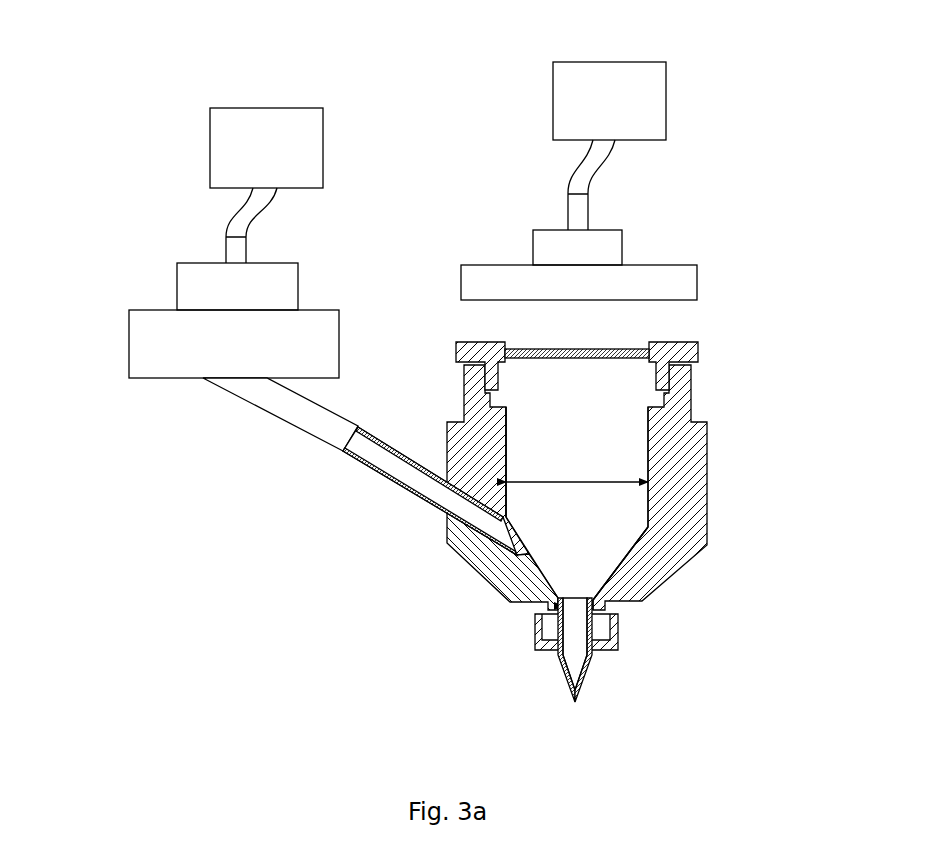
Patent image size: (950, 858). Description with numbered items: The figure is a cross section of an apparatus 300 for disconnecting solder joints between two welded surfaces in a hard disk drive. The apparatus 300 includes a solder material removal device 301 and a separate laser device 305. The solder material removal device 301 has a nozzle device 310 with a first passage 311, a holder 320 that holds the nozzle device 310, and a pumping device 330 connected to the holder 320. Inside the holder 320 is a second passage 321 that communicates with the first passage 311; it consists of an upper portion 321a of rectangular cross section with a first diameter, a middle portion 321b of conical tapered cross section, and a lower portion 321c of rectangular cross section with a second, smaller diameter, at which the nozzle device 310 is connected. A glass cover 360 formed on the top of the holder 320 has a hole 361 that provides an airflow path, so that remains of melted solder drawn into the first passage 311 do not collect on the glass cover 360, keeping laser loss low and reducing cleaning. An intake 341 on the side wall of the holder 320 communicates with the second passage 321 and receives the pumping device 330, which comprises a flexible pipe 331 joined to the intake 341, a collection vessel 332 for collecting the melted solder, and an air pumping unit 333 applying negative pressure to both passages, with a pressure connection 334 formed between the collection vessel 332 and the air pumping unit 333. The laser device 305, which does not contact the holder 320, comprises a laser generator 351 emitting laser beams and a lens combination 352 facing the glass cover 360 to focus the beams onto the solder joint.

The apparatus 300 is at (178, 38).
The solder material removal device 301 is at (722, 462).
The laser device 305 is at (675, 223).
The nozzle device 310 is at (600, 663).
The first passage 311 is at (577, 647).
The holder 320 is at (675, 502).
The second passage 321 is at (625, 468).
The upper portion 321a is at (613, 440).
The middle portion 321b is at (600, 558).
The lower portion 321c is at (595, 607).
The pumping device 330 is at (117, 287).
The flexible pipe 331 is at (302, 417).
The collection vessel 332 is at (165, 350).
The air pumping unit 333 is at (210, 150).
The pressure connection 334 is at (205, 277).
The intake 341 is at (423, 490).
The laser generator 351 is at (666, 102).
The lens combination 352 is at (675, 282).
The glass cover 360 is at (637, 356).
The hole 361 is at (573, 353).